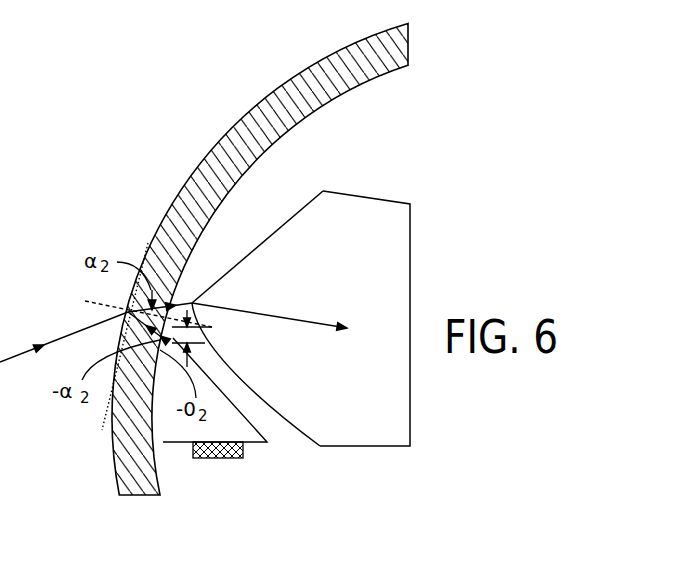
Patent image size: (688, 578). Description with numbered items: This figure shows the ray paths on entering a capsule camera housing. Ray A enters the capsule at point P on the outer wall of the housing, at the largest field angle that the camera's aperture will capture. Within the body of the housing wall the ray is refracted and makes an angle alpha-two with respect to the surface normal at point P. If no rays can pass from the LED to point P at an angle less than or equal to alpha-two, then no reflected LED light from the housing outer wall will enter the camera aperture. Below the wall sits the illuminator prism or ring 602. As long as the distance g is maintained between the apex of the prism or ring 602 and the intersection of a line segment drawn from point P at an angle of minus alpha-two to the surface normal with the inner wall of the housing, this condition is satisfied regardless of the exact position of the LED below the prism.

The prism or ring 602 is at (264, 432).
The ray A is at (64, 347).
The point P is at (148, 336).
The distance g is at (198, 338).